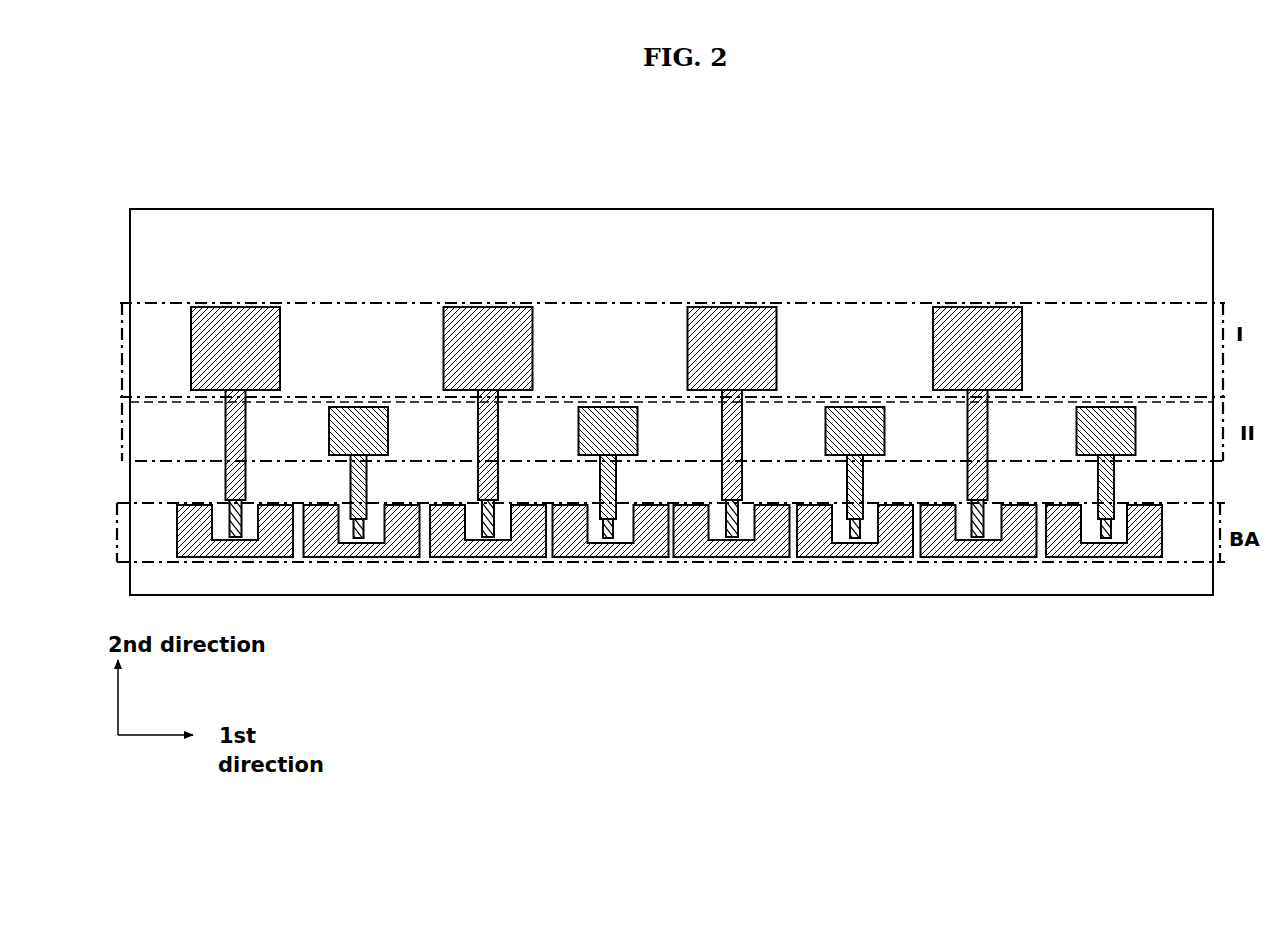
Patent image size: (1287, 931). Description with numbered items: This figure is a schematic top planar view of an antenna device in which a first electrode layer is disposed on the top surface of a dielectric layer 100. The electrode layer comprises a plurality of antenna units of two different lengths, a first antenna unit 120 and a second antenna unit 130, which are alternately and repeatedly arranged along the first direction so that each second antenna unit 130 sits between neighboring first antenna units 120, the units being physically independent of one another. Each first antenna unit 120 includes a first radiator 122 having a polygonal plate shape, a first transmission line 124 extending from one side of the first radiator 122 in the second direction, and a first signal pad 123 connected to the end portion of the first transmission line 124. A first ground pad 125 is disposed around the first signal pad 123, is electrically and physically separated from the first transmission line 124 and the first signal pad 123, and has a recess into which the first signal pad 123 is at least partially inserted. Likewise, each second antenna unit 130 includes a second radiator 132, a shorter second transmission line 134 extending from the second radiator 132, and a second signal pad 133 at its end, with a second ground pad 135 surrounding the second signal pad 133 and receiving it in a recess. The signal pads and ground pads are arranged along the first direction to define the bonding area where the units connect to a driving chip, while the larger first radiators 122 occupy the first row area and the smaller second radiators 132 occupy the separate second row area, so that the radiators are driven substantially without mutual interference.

The dielectric layer 100 is at (687, 583).
The first antenna unit 120 is at (290, 354).
The first radiator 122 is at (468, 382).
The first signal pad 123 is at (487, 427).
The first transmission line 124 is at (500, 458).
The first ground pad 125 is at (440, 555).
The second antenna unit 130 is at (394, 439).
The second radiator 132 is at (877, 457).
The second signal pad 133 is at (837, 512).
The second transmission line 134 is at (820, 547).
The second ground pad 135 is at (812, 543).